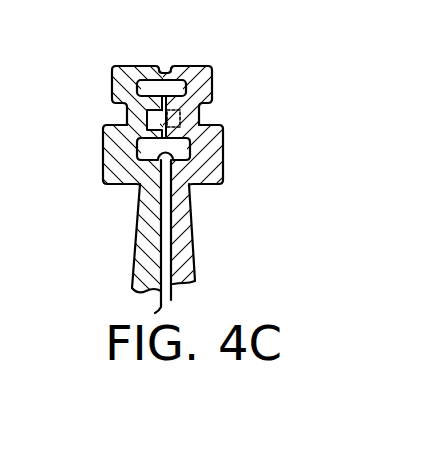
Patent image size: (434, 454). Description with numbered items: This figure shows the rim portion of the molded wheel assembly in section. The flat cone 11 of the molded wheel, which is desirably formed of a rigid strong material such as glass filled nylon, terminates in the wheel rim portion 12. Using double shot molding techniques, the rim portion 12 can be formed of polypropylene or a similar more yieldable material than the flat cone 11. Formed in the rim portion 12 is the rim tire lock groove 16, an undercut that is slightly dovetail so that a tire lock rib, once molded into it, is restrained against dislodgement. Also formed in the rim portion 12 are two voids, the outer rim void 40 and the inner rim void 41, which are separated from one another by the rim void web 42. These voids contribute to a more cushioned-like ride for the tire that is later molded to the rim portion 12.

The flat cone 11 is at (193, 252).
The rim portion 12 is at (137, 85).
The rim tire lock groove 16 is at (203, 121).
The outer rim void 40 is at (170, 88).
The inner rim void 41 is at (136, 140).
The rim void web 42 is at (148, 149).